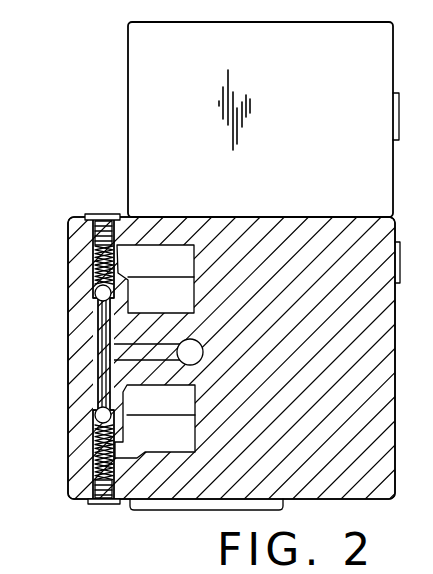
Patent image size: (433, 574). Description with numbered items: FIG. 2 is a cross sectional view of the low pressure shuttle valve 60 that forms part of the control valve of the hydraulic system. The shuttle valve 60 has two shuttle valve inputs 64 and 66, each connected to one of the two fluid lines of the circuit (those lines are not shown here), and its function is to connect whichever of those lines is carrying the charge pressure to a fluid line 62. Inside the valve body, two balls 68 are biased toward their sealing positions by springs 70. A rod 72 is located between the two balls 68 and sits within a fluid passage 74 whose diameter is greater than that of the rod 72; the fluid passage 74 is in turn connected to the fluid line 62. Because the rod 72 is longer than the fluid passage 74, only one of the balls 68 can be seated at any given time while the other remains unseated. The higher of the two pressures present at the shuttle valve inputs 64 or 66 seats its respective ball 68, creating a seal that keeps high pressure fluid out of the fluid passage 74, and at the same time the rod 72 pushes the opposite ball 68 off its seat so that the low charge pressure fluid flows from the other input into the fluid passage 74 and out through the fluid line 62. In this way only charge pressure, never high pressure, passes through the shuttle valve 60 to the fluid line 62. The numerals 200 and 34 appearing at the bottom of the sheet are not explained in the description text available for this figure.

The low pressure shuttle valve 60 is at (112, 196).
The fluid line 62 is at (166, 356).
The shuttle valve input 64 is at (178, 288).
The shuttle valve input 66 is at (180, 398).
The ball 68 is at (98, 290).
The spring 70 is at (93, 250).
The rod 72 is at (108, 361).
The fluid passage 74 is at (98, 333).
The fluid supply assembly 200 is at (58, 573).
The outlet 34 is at (119, 573).